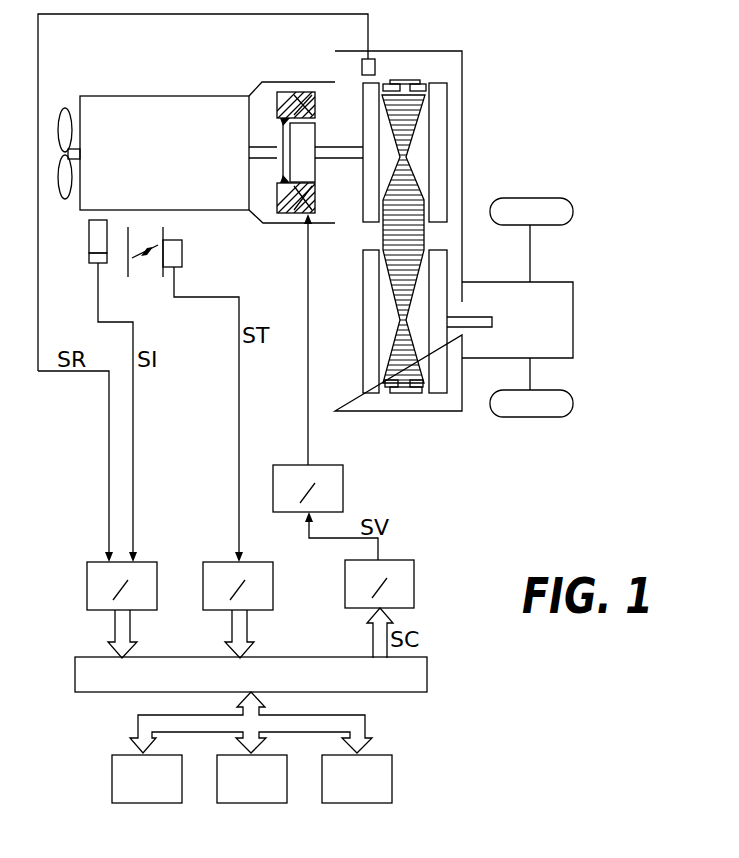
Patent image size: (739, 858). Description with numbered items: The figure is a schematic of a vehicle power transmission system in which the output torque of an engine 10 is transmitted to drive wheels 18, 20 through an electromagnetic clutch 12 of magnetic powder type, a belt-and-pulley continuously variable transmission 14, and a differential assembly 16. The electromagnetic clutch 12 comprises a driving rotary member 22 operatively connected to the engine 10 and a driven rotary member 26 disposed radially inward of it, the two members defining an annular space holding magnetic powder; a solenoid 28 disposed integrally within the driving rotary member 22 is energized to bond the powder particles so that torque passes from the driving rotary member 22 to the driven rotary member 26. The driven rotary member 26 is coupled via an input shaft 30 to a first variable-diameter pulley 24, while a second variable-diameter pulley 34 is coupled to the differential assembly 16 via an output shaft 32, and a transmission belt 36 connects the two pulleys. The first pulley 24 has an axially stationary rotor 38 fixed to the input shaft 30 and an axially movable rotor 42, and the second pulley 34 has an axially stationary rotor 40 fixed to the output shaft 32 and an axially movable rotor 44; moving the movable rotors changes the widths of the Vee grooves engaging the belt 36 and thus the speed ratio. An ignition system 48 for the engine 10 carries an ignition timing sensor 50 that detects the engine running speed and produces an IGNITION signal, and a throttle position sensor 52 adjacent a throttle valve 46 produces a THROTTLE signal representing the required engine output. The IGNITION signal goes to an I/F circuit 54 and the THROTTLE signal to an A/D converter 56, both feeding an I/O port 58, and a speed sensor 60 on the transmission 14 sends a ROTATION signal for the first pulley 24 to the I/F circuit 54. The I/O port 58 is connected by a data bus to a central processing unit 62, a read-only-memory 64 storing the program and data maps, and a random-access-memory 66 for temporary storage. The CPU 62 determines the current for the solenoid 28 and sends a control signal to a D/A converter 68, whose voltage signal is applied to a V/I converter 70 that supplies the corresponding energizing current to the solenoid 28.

The engine 10 is at (129, 107).
The electromagnetic clutch 12 is at (250, 66).
The continuously variable transmission 14 is at (472, 62).
The differential assembly 16 is at (563, 297).
The drive wheel 18 is at (557, 212).
The drive wheel 20 is at (555, 407).
The driving rotary member 22 is at (280, 138).
The first variable-diameter pulley 24 is at (406, 231).
The driven rotary member 26 is at (300, 165).
The solenoid 28 is at (280, 195).
The input shaft 30 is at (347, 152).
The output shaft 32 is at (475, 316).
The second variable-diameter pulley 34 is at (365, 366).
The transmission belt 36 is at (407, 406).
The axially stationary rotor 38 is at (363, 210).
The axially stationary rotor 40 is at (438, 386).
The axially movable rotor 42 is at (437, 170).
The axially movable rotor 44 is at (370, 390).
The throttle valve 46 is at (135, 258).
The ignition system 48 is at (92, 243).
The ignition timing sensor 50 is at (93, 265).
The throttle position sensor 52 is at (177, 252).
The I/F circuit 54 is at (95, 567).
The A/D converter 56 is at (215, 567).
The I/O port 58 is at (420, 678).
The speed sensor 60 is at (377, 67).
The central processing unit 62 is at (165, 797).
The read-only-memory 64 is at (273, 797).
The random-access-memory 66 is at (380, 797).
The D/A converter 68 is at (410, 570).
The V/I converter 70 is at (338, 483).